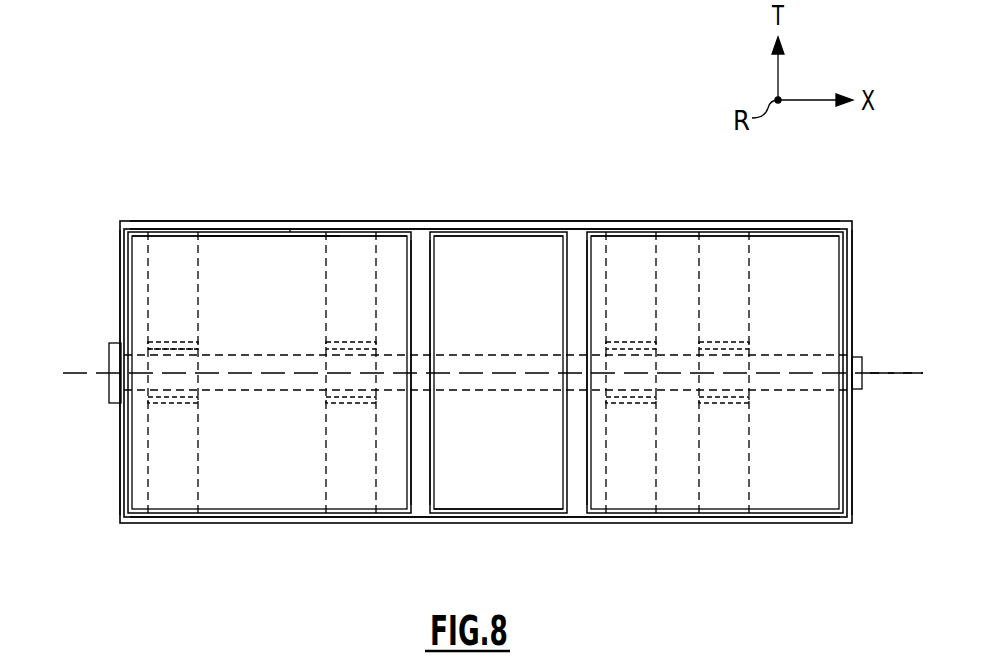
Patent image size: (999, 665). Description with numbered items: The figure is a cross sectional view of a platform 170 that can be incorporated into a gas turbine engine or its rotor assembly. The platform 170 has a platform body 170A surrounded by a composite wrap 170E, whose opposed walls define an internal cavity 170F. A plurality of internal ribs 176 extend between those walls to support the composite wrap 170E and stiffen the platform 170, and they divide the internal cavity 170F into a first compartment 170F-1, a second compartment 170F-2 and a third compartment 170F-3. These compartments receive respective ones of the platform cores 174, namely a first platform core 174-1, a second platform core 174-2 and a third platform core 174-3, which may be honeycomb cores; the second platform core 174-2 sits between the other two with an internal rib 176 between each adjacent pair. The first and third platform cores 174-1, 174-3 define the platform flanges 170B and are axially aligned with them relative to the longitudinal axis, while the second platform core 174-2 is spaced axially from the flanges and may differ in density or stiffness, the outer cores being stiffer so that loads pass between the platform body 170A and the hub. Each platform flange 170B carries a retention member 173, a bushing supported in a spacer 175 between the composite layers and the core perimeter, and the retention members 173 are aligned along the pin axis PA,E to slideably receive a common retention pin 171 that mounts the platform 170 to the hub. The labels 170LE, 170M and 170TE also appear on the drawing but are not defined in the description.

The platform 170 is at (188, 74).
The platform body 170A is at (137, 221).
The platform flanges 170B is at (149, 498).
The composite wrap 170E is at (290, 228).
The internal cavity 170F is at (180, 238).
The first compartment 170F-1 is at (274, 238).
The second compartment 170F-2 is at (500, 238).
The third compartment 170F-3 is at (675, 238).
The leading end 170LE is at (121, 490).
The mounting wall 170M is at (250, 222).
The trailing end 170TE is at (852, 492).
The retention pin 171 is at (108, 350).
The retention member 173 is at (184, 347).
The platform cores 174 is at (392, 248).
The first platform core 174-1 is at (302, 232).
The second platform core 174-2 is at (517, 232).
The third platform core 174-3 is at (690, 232).
The spacer 175 is at (167, 342).
The internal ribs 176 is at (575, 489).
The pin axis and longitudinal axis PA,E is at (888, 372).